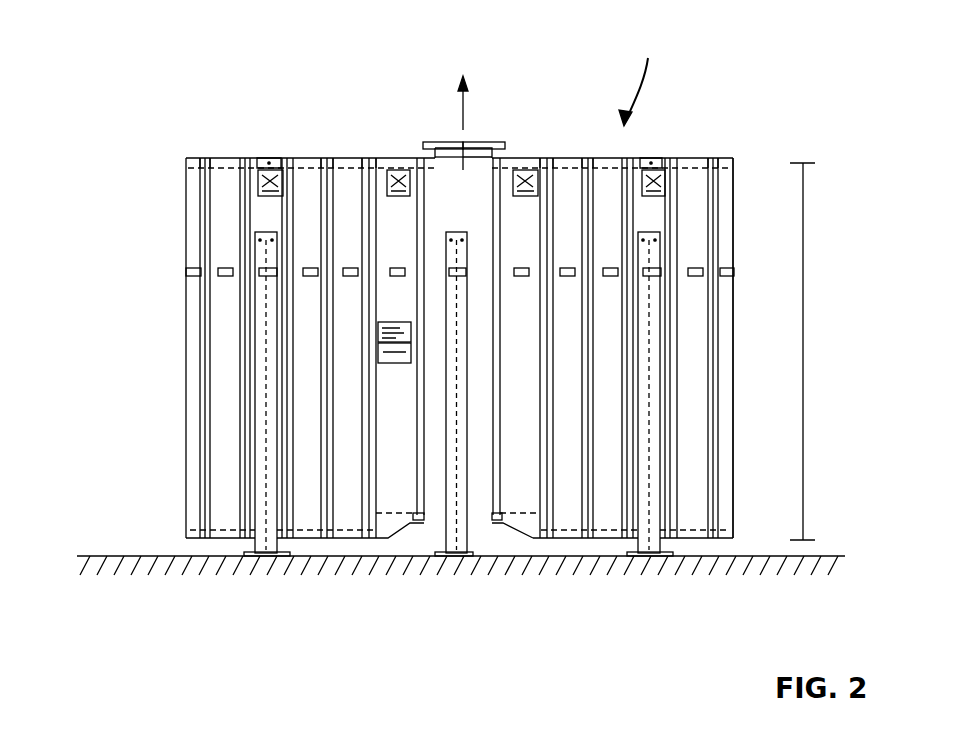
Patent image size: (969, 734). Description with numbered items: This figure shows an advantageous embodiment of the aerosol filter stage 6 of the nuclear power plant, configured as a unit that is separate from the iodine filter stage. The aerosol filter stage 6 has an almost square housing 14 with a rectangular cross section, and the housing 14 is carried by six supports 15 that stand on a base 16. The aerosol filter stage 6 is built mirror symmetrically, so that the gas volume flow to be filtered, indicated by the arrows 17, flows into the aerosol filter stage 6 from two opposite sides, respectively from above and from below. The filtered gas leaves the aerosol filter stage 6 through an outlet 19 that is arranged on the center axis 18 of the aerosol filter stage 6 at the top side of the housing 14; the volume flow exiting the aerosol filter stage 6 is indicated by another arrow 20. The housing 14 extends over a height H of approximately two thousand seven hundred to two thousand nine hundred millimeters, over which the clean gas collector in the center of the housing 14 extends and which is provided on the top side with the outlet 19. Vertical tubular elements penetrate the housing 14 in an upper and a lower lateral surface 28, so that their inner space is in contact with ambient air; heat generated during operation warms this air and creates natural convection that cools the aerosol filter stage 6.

The aerosol filter stage 6 is at (637, 80).
The housing 14 is at (175, 162).
The support 15 is at (263, 483).
The base 16 is at (127, 554).
The arrow 17 is at (195, 150).
The center axis 18 is at (460, 150).
The outlet 19 is at (480, 148).
The arrow 20 is at (465, 113).
The lateral surface 28 is at (738, 160).
The height H is at (803, 250).